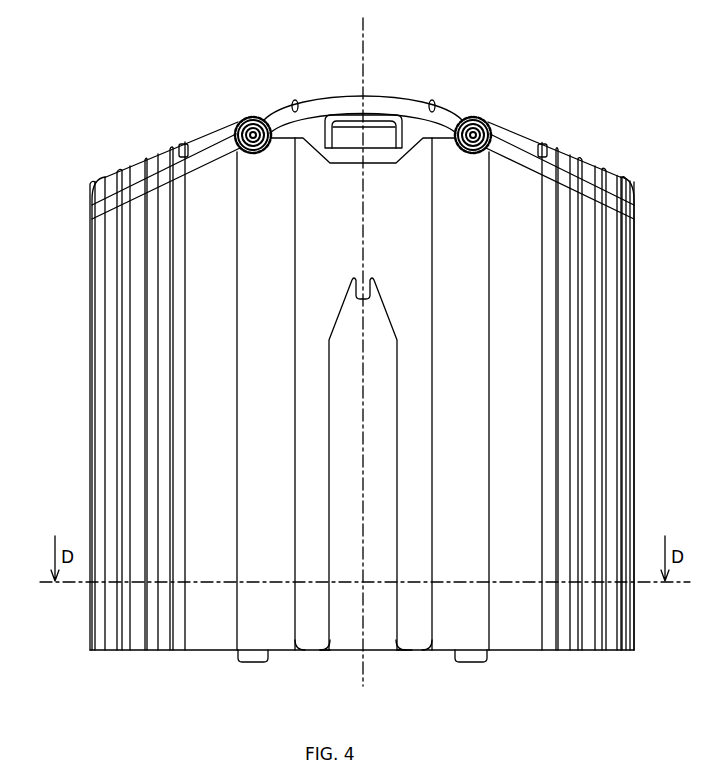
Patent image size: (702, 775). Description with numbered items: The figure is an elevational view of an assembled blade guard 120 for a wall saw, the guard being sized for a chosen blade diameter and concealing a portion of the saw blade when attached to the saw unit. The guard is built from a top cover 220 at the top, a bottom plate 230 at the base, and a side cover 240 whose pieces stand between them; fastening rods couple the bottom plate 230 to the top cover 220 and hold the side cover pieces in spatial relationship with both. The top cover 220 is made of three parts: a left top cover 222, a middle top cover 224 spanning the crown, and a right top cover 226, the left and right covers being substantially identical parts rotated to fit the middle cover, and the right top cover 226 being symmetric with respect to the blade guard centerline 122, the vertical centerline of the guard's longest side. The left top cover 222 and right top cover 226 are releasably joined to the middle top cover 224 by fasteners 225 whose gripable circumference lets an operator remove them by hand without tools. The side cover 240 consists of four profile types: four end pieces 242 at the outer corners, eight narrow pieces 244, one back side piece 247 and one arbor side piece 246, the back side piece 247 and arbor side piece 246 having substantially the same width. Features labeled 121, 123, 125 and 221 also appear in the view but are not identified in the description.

The blade guard 120 is at (600, 63).
The tab 121 is at (542, 145).
The blade guard centerline 122 is at (367, 63).
The handle 123 is at (389, 128).
The hub 125 is at (480, 118).
The top cover 220 is at (84, 183).
The tab 221 is at (184, 144).
The left top cover 222 is at (138, 166).
The middle top cover 224 is at (330, 100).
The fasteners 225 is at (247, 118).
The right top cover 226 is at (603, 170).
The bottom plate 230 is at (120, 652).
The side cover 240 is at (84, 426).
The end piece 242 is at (96, 642).
The narrow piece 244 is at (208, 645).
The arbor side piece 246 is at (408, 645).
The back side piece 247 is at (378, 645).